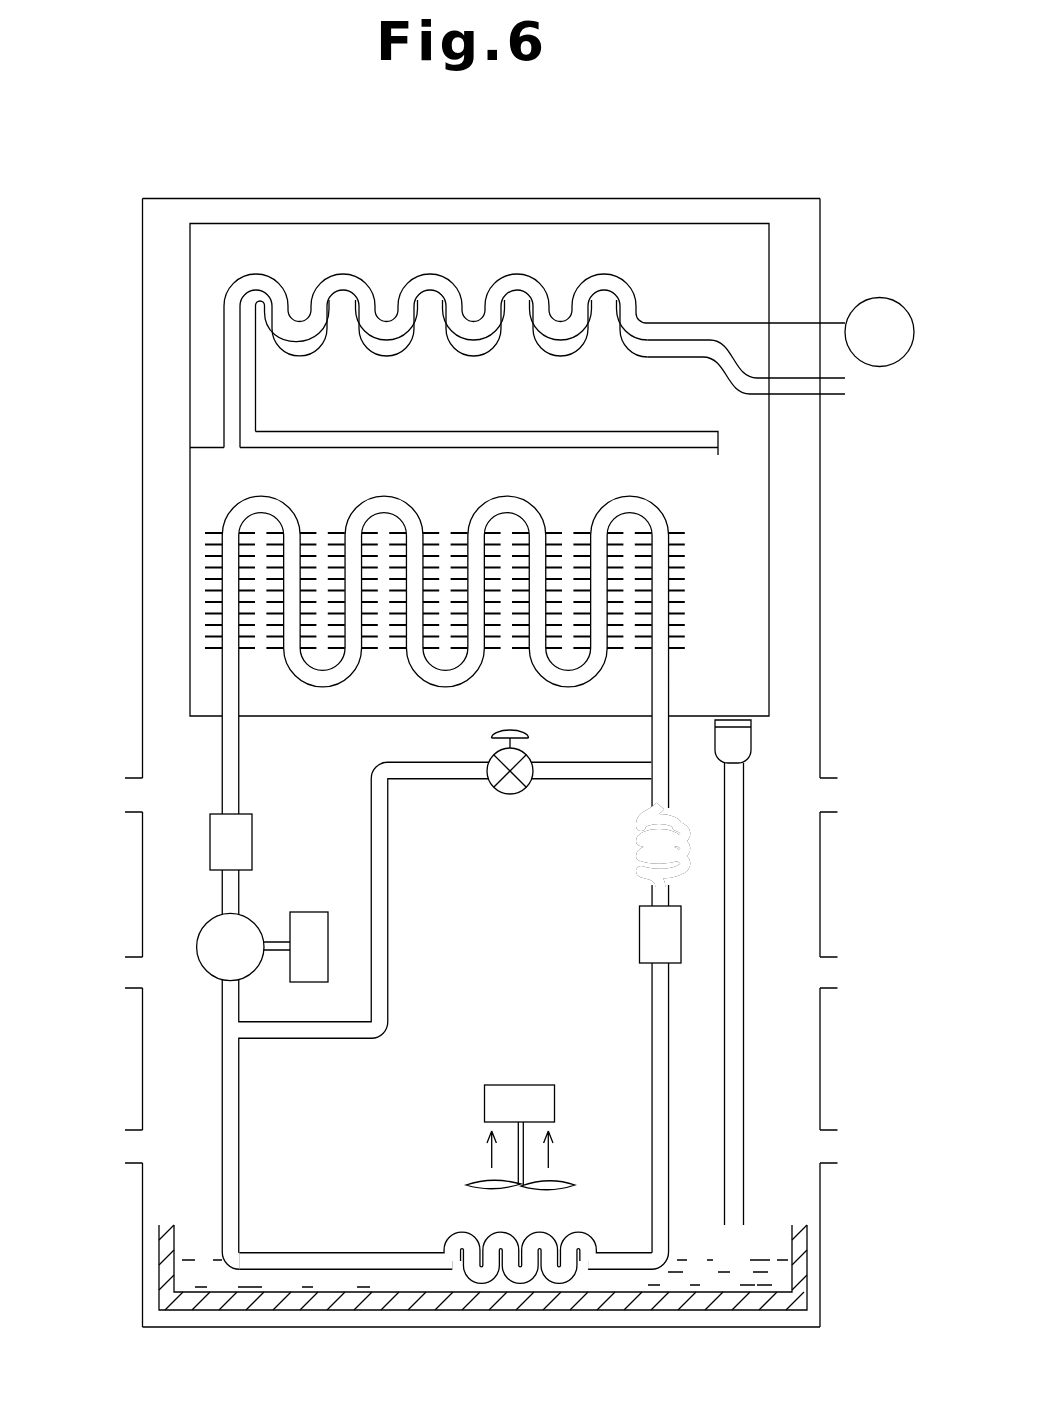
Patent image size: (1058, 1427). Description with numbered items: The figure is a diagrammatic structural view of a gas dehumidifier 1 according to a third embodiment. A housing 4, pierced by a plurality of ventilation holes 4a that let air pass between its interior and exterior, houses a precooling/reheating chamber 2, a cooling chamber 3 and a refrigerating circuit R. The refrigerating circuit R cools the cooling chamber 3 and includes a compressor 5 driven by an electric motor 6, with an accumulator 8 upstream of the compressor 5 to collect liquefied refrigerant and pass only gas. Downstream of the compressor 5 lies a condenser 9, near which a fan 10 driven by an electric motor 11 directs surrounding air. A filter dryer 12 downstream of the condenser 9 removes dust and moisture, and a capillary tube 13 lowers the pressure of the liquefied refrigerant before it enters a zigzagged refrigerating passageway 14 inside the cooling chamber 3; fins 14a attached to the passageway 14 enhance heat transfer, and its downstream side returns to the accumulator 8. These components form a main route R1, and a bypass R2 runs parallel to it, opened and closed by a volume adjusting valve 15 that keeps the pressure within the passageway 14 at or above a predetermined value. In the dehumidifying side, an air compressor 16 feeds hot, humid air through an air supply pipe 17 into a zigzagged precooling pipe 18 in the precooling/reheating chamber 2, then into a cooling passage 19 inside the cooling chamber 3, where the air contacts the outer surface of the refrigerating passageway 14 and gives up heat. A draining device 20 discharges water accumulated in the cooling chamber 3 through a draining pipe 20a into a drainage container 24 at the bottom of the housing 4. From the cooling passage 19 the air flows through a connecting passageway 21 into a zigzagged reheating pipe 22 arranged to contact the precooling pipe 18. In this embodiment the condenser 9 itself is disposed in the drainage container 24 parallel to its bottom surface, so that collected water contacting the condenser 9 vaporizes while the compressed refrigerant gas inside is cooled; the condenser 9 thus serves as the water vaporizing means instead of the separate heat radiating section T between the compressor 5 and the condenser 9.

The gas dehumidifier 1 is at (692, 171).
The precooling/reheating chamber 2 is at (354, 224).
The cooling chamber 3 is at (769, 572).
The housing 4 is at (432, 199).
The ventilation holes 4a is at (125, 778).
The compressor 5 is at (249, 918).
The electric motor 6 is at (318, 912).
The accumulator 8 is at (252, 832).
The condenser 9 is at (453, 1233).
The fan 10 is at (576, 1186).
The electric motor 11 is at (545, 1085).
The filter dryer 12 is at (640, 930).
The capillary tube 13 is at (640, 843).
The refrigerating passageway 14 is at (528, 498).
The fins 14a is at (662, 508).
The volume adjusting valve 15 is at (505, 795).
The air compressor 16 is at (889, 297).
The air supply pipe 17 is at (833, 320).
The precooling pipe 18 is at (546, 277).
The cooling passage 19 is at (207, 472).
The draining device 20 is at (752, 740).
The draining pipe 20a is at (738, 960).
The connecting passageway 21 is at (505, 431).
The reheating pipe 22 is at (388, 358).
The drainage container 24 is at (795, 1224).
The refrigerating circuit R is at (205, 742).
The main route R1 is at (669, 1080).
The bypass R2 is at (423, 761).
The heat radiating section T is at (307, 1253).